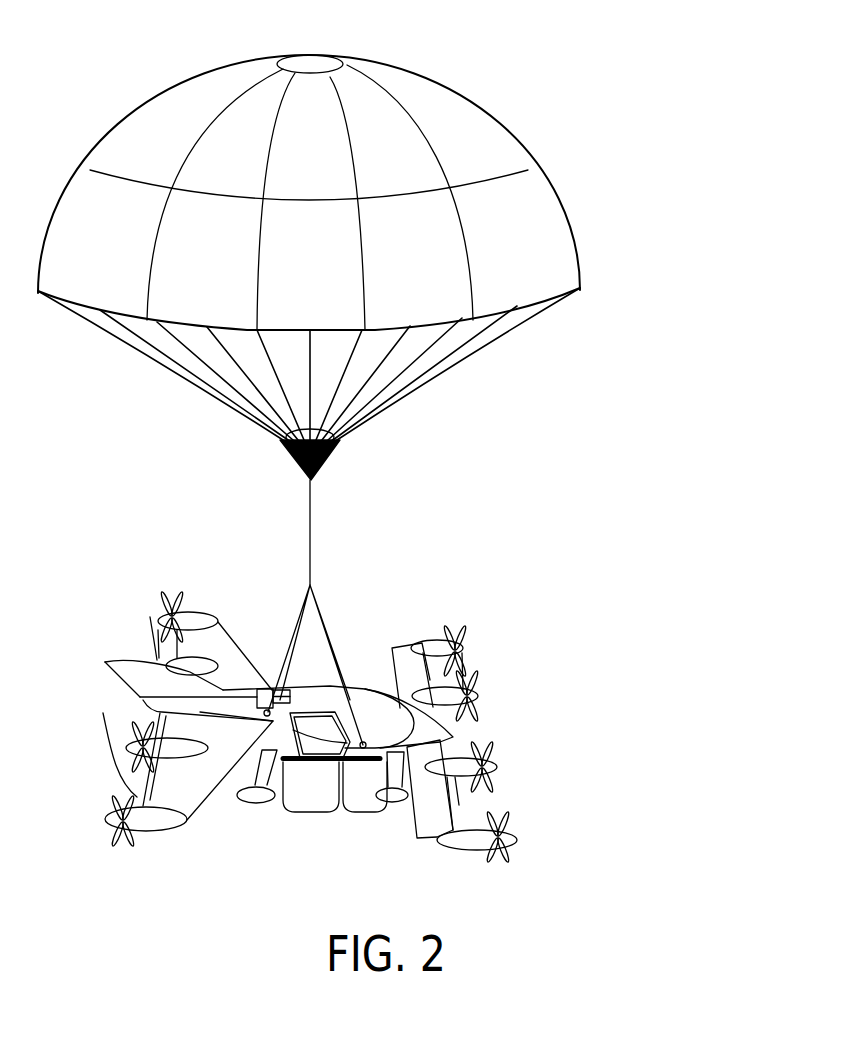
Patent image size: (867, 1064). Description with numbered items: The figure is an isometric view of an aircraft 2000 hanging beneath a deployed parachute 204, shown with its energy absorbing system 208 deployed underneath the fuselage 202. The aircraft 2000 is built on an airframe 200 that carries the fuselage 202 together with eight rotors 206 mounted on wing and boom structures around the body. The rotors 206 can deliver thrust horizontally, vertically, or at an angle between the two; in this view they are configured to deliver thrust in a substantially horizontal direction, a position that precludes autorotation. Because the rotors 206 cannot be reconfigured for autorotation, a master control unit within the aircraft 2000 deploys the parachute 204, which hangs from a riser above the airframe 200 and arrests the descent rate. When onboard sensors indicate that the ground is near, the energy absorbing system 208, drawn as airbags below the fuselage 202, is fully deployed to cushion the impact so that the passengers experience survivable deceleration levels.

The aircraft 2000 is at (666, 209).
The parachute 204 is at (413, 90).
The airframe 200 is at (216, 565).
The fuselage 202 is at (376, 700).
The rotors 206 is at (150, 617).
The energy absorbing system 208 is at (310, 802).